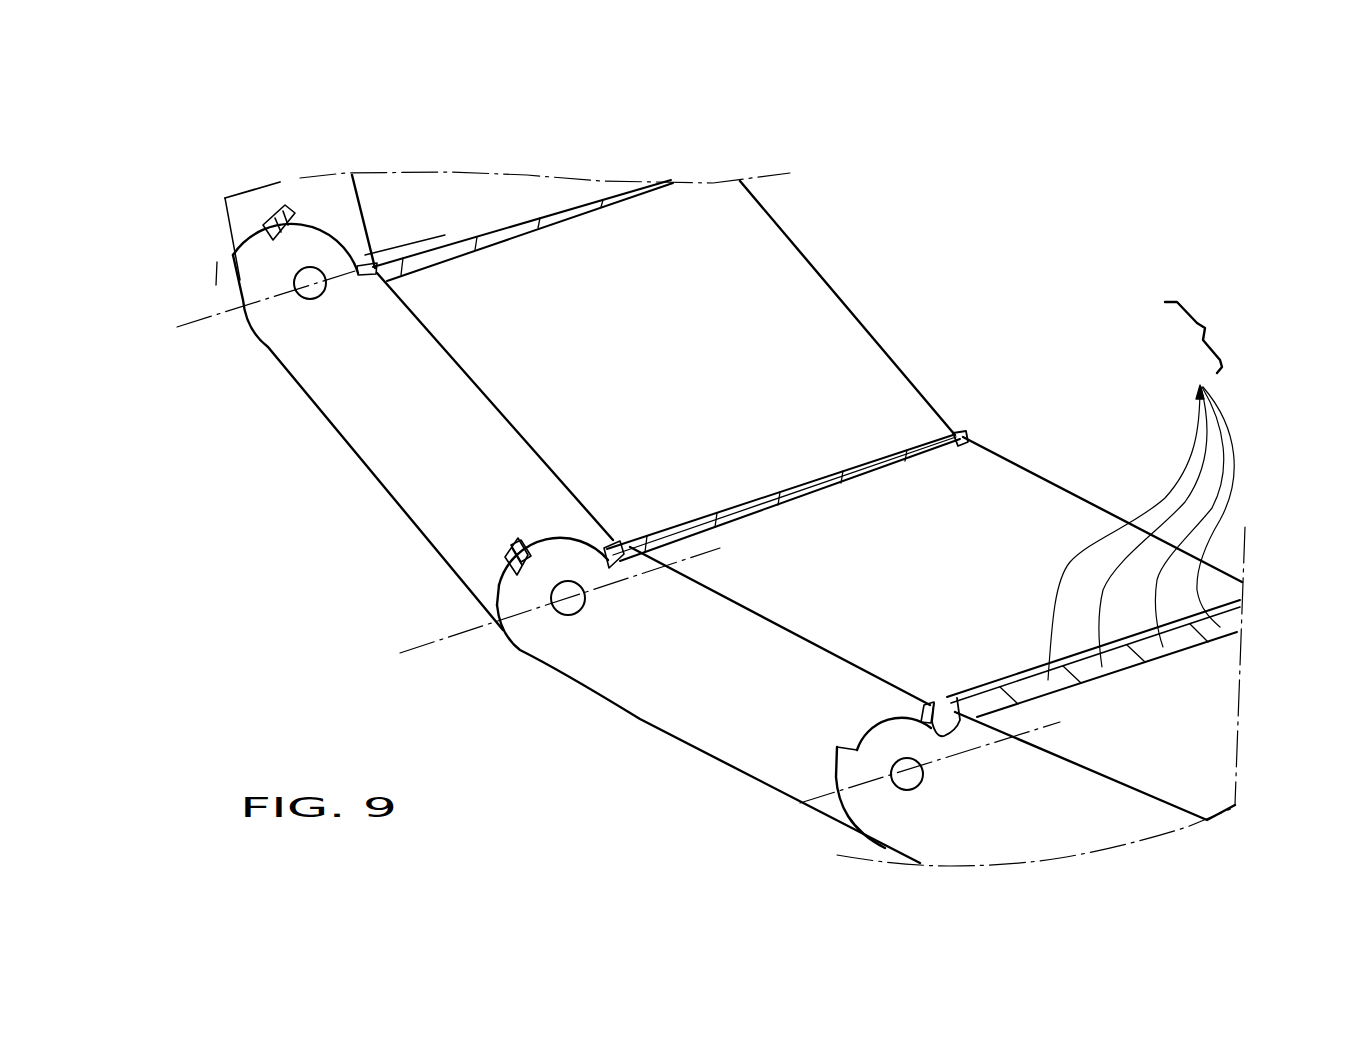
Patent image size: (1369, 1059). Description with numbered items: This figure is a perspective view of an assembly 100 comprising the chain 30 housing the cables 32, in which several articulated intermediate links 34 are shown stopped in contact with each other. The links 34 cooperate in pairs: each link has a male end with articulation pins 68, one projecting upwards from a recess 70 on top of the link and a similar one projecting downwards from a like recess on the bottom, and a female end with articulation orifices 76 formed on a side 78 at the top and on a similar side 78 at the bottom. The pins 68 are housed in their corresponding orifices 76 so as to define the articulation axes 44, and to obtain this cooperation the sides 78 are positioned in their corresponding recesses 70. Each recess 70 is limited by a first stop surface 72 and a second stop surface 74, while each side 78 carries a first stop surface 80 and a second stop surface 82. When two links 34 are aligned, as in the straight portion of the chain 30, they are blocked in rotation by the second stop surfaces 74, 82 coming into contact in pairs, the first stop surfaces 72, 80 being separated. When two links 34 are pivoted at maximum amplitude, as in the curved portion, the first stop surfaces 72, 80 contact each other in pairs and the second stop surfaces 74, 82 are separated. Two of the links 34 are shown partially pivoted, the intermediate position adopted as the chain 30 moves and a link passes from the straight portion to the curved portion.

The chain 30 is at (1020, 297).
The cables 32 is at (1141, 517).
The intermediate link 34 is at (548, 163).
The articulation axis 44 is at (200, 318).
The articulation pin 68 is at (310, 299).
The recess 70 is at (228, 198).
The first stop surface 72 is at (367, 275).
The second stop surface 74 is at (505, 540).
The articulation orifice 76 is at (320, 270).
The side 78 is at (253, 258).
The first stop surface 80 is at (375, 262).
The second stop surface 82 is at (284, 206).
The assembly 100 is at (1208, 337).